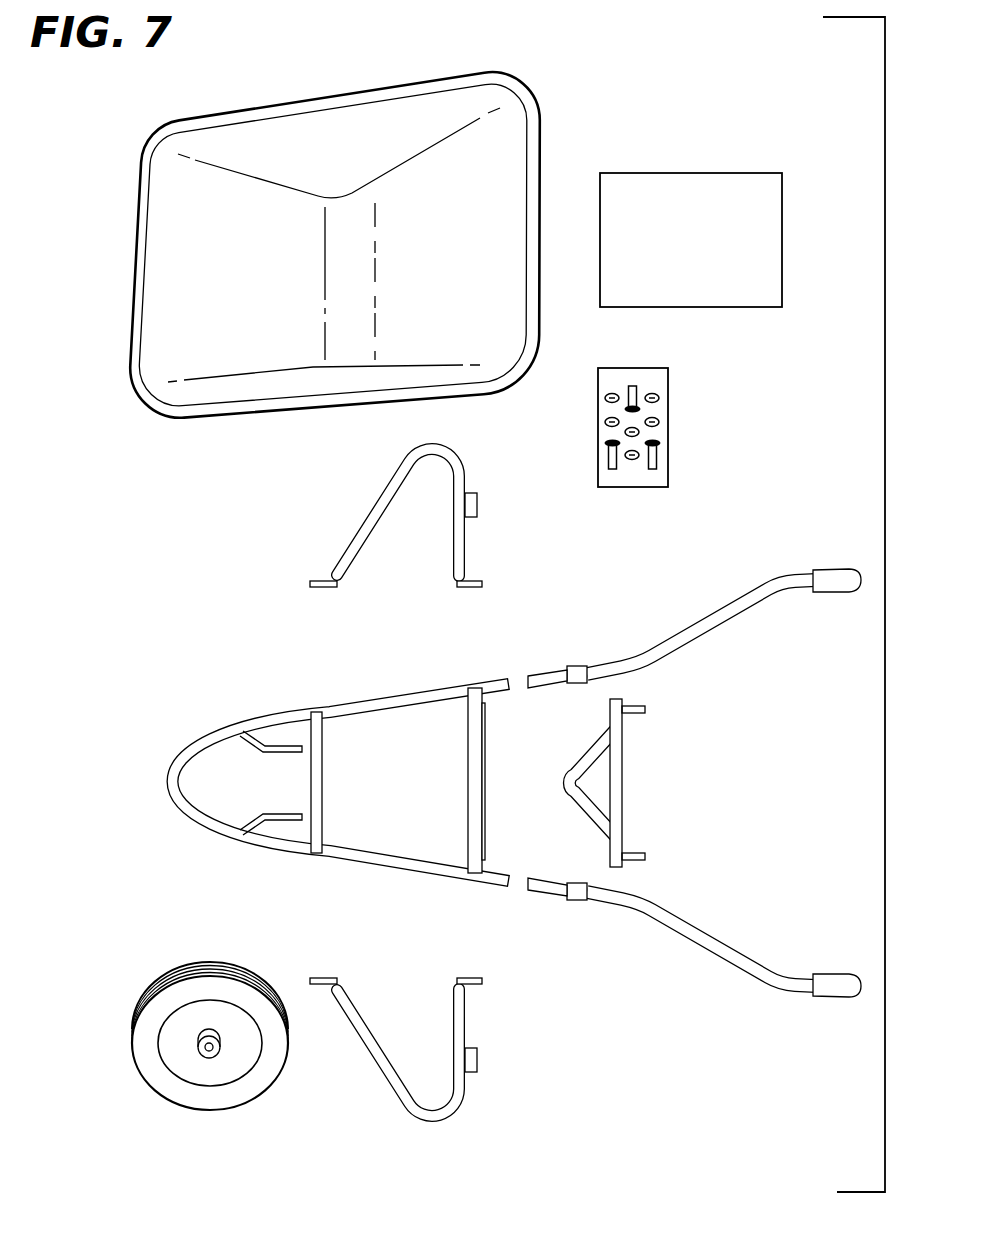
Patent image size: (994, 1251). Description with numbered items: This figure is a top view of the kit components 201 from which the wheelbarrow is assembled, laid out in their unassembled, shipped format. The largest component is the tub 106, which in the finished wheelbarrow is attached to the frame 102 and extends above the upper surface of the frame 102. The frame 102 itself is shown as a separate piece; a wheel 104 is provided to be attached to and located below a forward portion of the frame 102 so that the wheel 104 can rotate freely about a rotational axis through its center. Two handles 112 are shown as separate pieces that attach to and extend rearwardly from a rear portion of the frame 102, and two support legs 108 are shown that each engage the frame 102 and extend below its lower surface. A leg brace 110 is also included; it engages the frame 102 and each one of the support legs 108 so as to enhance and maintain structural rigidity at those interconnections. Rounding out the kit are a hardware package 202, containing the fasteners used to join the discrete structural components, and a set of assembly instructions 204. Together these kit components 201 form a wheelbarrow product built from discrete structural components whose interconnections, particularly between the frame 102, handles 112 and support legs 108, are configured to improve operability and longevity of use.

The frame 102 is at (220, 728).
The wheel 104 is at (187, 995).
The tub 106 is at (320, 108).
The support legs 108 is at (372, 513).
The leg brace 110 is at (617, 765).
The handles 112 is at (717, 607).
The kit components 201 is at (885, 477).
The hardware package 202 is at (648, 378).
The assembly instructions 204 is at (677, 182).